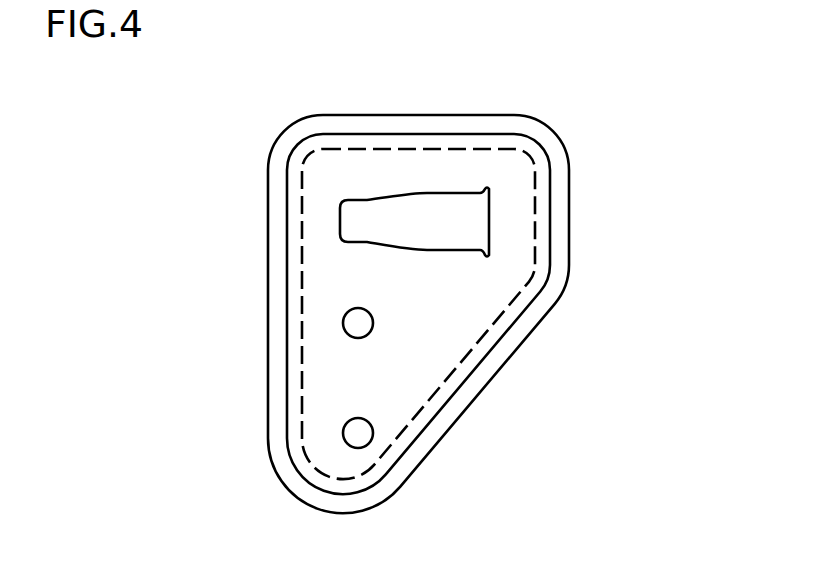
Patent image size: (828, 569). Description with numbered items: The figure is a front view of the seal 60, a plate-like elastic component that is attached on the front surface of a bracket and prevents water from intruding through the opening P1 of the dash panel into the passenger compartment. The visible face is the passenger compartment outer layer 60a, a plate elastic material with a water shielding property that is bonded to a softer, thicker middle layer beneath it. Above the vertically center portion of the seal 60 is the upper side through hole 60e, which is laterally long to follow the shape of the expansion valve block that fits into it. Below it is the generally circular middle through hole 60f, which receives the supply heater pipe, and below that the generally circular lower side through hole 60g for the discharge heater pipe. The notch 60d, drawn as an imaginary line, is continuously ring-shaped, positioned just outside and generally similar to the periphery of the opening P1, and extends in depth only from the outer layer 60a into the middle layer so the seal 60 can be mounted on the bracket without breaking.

The seal 60 is at (400, 62).
The passenger compartment outer layer 60a is at (522, 160).
The notch 60d is at (412, 468).
The upper side through hole 60e is at (390, 246).
The middle through hole 60f is at (360, 325).
The lower side through hole 60g is at (360, 433).
The opening P1 is at (303, 280).